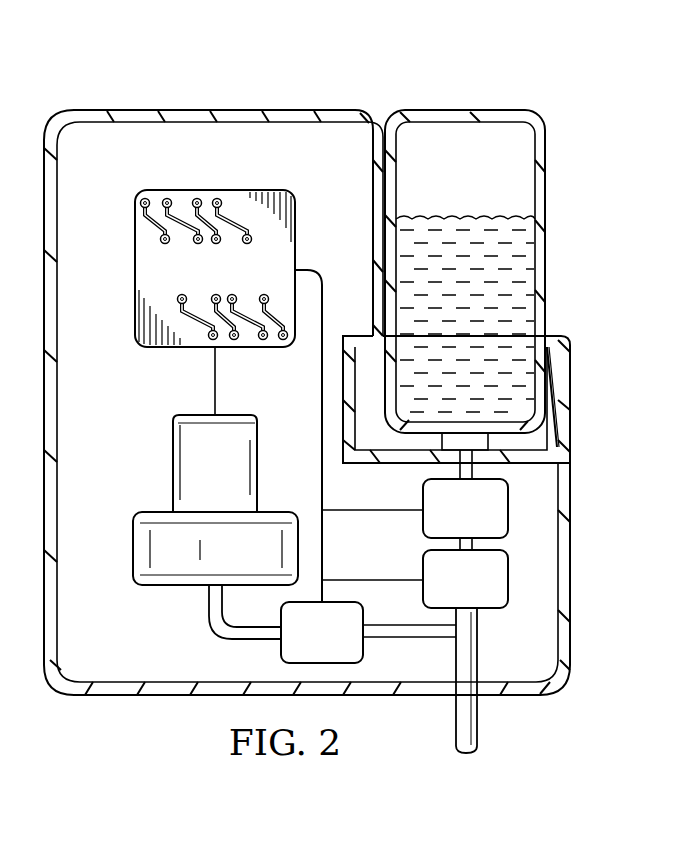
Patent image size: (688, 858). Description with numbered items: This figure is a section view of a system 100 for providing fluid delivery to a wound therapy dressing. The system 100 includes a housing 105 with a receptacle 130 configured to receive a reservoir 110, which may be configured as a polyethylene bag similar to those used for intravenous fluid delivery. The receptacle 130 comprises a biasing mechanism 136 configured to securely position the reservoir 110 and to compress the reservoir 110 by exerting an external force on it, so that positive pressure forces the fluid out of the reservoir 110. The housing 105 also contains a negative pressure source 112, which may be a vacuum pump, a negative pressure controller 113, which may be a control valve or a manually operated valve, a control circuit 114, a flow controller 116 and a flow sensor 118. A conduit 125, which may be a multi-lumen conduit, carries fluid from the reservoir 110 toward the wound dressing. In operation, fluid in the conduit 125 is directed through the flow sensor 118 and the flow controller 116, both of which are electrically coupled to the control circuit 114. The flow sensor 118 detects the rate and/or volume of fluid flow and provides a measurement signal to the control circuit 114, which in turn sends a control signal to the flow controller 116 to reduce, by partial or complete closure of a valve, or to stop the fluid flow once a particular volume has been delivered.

The system 100 is at (446, 64).
The housing 105 is at (184, 106).
The reservoir 110 is at (546, 207).
The negative pressure source 112 is at (187, 588).
The negative pressure controller 113 is at (301, 650).
The control circuit 114 is at (134, 272).
The flow controller 116 is at (445, 595).
The flow sensor 118 is at (445, 524).
The conduit 125 is at (479, 718).
The receptacle 130 is at (569, 444).
The biasing mechanism 136 is at (568, 392).